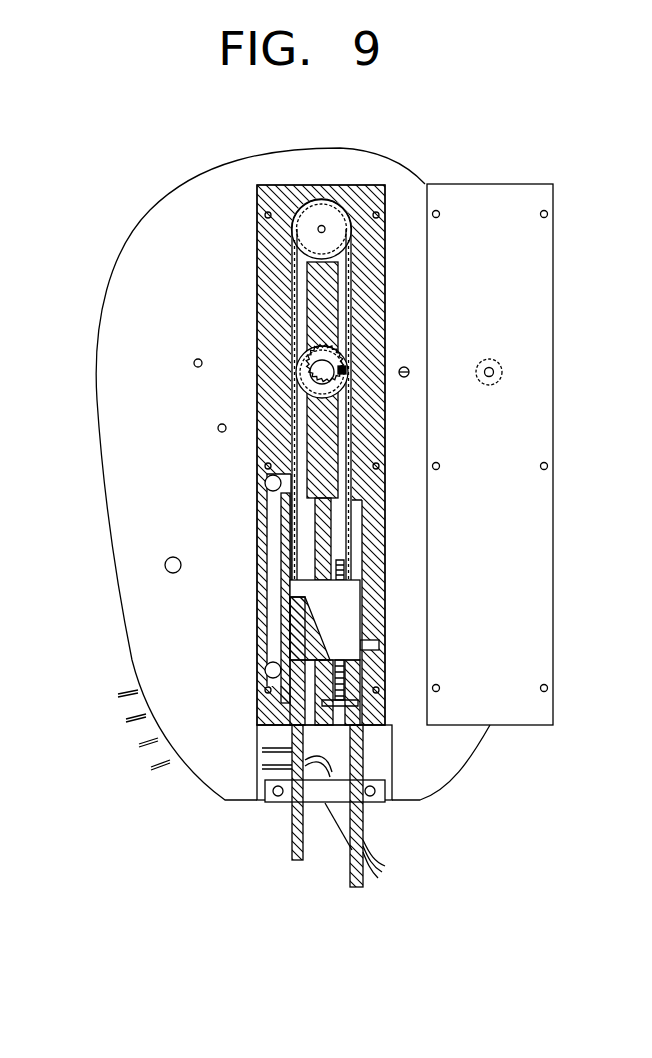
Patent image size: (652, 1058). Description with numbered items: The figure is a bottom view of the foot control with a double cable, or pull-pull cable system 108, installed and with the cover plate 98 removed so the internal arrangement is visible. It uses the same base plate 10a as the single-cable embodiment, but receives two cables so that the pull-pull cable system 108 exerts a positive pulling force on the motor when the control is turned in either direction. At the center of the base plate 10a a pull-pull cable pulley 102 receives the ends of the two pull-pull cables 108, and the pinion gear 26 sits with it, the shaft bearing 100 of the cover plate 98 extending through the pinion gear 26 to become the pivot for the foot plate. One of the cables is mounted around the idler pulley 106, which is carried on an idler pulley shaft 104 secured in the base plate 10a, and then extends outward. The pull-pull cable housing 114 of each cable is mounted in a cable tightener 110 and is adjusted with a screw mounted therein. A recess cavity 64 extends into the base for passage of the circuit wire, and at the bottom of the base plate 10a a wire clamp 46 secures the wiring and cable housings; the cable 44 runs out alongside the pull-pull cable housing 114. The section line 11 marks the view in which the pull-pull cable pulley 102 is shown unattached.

The base plate 10a is at (155, 633).
The section line 11- 11 is at (57, 354).
The pinion gear 26 is at (302, 360).
The cable 44 is at (337, 818).
The wire clamp 46 is at (305, 792).
The recess cavity 64 is at (275, 525).
The cover plate 98 is at (520, 665).
The shaft bearing 100 is at (495, 377).
The pull-pull cable pulley 102 is at (305, 378).
The idler pulley shaft 104 is at (318, 229).
The idler pulley 106 is at (307, 221).
The pull-pull cable system 108 is at (294, 565).
The cable tightener 110 is at (345, 628).
The pull-pull cable housing 114 is at (362, 820).